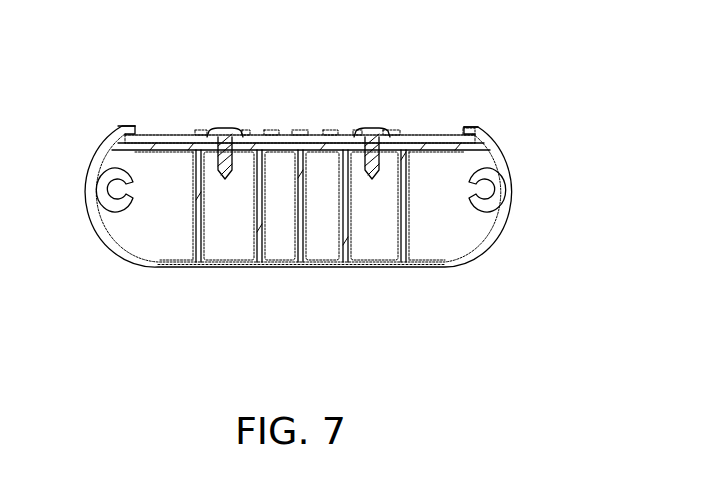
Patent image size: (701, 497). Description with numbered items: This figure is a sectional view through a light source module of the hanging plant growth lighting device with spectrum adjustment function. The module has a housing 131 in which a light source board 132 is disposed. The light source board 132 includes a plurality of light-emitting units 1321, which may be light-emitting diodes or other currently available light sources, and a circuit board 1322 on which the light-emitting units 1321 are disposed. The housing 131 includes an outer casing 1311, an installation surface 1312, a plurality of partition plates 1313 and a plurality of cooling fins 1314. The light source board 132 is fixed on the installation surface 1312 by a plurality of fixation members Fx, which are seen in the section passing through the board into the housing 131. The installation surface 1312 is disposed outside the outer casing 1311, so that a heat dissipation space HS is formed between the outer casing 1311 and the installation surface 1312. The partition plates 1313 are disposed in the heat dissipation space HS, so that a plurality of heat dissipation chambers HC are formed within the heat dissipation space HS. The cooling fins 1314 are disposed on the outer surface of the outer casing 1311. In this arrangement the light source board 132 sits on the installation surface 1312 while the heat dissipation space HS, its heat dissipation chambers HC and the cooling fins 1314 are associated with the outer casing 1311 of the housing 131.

The housing 131 is at (619, 117).
The outer casing 1311 is at (503, 184).
The installation surface 1312 is at (470, 124).
The partition plates 1313 is at (402, 250).
The cooling fins 1314 is at (503, 214).
The light source board 132 is at (498, 66).
The light-emitting units 1321 is at (396, 131).
The circuit board 1322 is at (443, 141).
The fixation members Fx is at (225, 128).
The heat dissipation space HS is at (156, 241).
The heat dissipation chambers HC is at (366, 246).